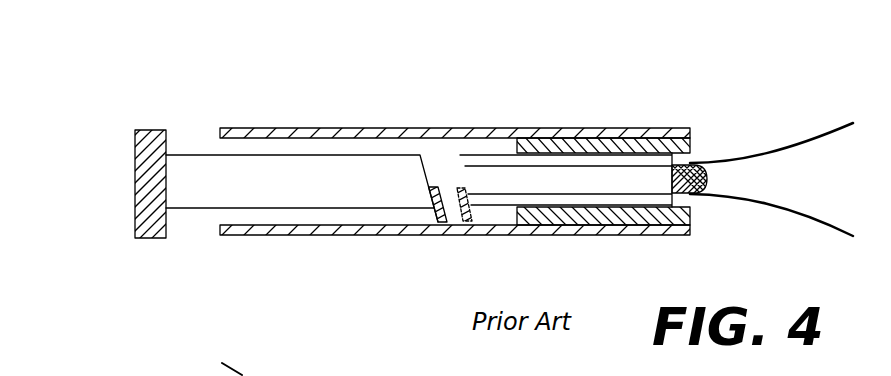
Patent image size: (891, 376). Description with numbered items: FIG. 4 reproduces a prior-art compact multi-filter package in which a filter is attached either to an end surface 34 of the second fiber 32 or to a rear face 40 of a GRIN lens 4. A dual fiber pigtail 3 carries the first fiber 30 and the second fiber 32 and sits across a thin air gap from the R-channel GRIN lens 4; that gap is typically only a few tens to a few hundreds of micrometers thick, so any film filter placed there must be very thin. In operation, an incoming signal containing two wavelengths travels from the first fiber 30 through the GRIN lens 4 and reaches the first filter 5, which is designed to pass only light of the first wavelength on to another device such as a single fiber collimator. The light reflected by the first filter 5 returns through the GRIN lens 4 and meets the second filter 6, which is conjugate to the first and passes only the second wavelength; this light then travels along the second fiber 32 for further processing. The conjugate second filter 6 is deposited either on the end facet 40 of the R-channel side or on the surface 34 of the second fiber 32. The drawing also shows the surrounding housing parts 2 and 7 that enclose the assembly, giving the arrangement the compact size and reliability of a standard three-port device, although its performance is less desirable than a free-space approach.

The ferrule / sleeve 2 is at (557, 143).
The dual fiber pigtail 3 is at (594, 180).
The GRIN lens 4 is at (334, 170).
The first filter 5 is at (143, 236).
The second filter 6 is at (457, 223).
The barrel 7 is at (258, 147).
The first fiber 30 is at (745, 162).
The second fiber 32 is at (738, 197).
The end surface of the second fiber 34 is at (461, 186).
The rear face of the GRIN lens 40 is at (429, 186).